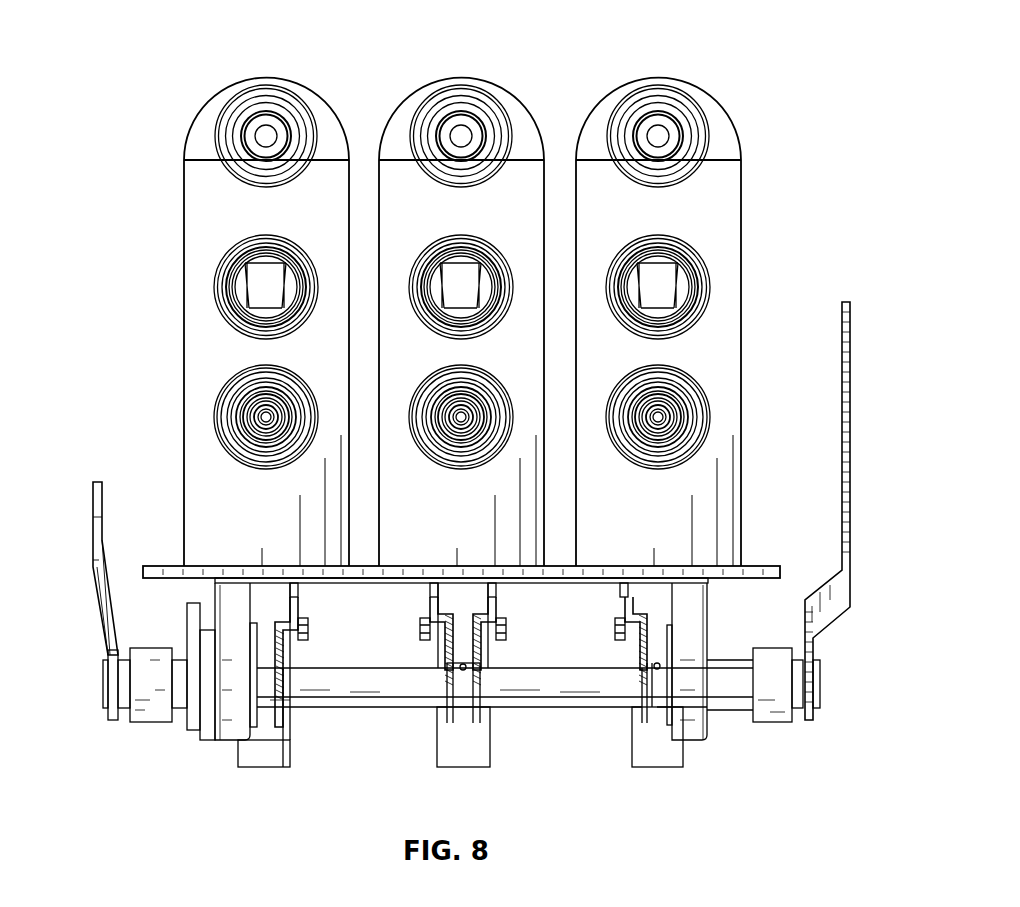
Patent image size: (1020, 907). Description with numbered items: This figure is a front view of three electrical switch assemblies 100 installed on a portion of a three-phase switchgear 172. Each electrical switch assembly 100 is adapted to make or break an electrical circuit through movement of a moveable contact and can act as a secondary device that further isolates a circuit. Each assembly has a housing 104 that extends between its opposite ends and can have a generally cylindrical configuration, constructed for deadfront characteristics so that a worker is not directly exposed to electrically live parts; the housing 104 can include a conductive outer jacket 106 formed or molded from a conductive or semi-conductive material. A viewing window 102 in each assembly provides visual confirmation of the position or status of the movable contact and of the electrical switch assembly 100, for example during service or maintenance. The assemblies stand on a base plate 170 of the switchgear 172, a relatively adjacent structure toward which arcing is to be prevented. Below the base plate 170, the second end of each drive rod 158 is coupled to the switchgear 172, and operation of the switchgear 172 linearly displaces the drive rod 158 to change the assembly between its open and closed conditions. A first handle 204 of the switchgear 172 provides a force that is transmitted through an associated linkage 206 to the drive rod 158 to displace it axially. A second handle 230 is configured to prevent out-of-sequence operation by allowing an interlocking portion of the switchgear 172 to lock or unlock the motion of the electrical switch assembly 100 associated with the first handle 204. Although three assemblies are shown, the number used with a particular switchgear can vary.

The electrical switch assembly 100 is at (449, 288).
The viewing window 102 is at (245, 293).
The housing 104 is at (193, 183).
The conductive outer jacket 106 is at (204, 385).
The drive rod 158 is at (448, 602).
The base plate 170 is at (755, 566).
The switchgear 172 is at (822, 692).
The first handle 204 is at (845, 385).
The linkage 206 is at (727, 733).
The second handle 230 is at (96, 527).